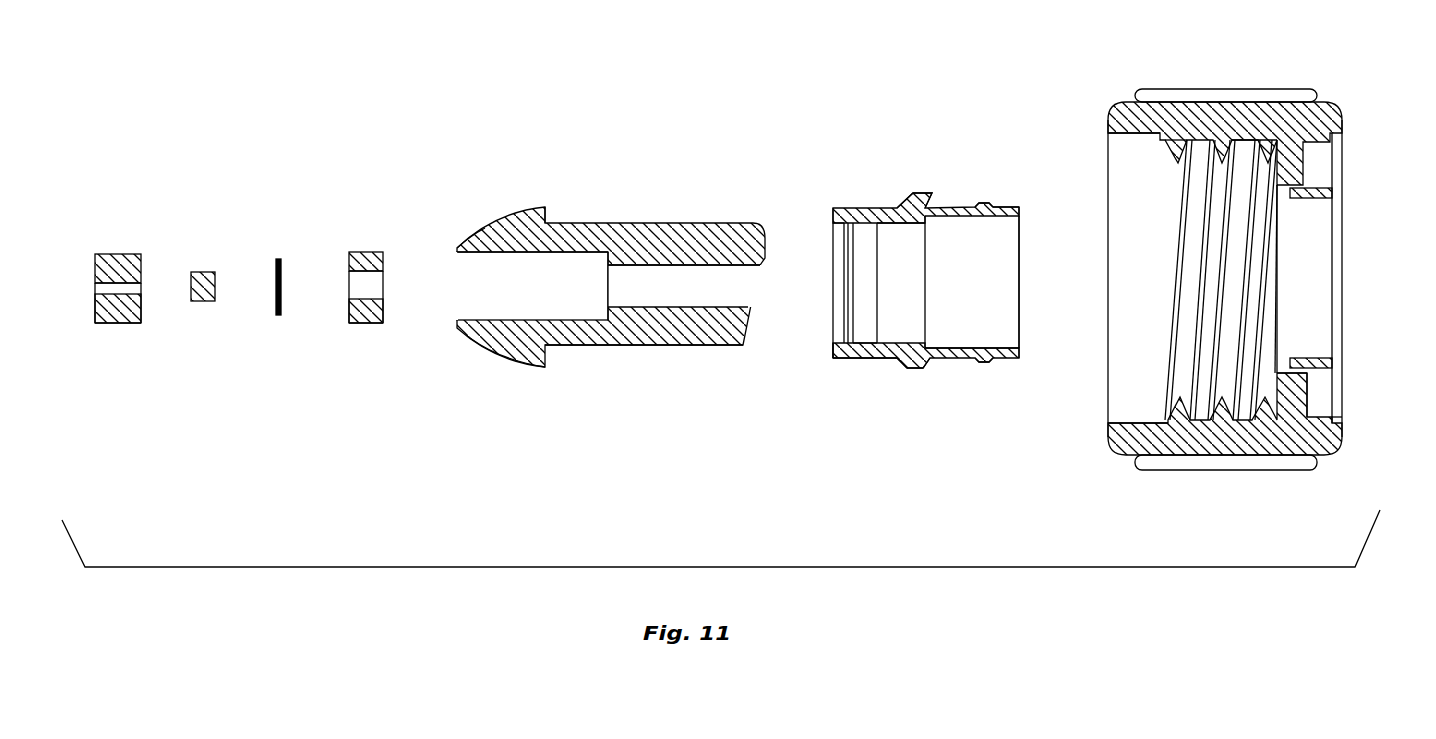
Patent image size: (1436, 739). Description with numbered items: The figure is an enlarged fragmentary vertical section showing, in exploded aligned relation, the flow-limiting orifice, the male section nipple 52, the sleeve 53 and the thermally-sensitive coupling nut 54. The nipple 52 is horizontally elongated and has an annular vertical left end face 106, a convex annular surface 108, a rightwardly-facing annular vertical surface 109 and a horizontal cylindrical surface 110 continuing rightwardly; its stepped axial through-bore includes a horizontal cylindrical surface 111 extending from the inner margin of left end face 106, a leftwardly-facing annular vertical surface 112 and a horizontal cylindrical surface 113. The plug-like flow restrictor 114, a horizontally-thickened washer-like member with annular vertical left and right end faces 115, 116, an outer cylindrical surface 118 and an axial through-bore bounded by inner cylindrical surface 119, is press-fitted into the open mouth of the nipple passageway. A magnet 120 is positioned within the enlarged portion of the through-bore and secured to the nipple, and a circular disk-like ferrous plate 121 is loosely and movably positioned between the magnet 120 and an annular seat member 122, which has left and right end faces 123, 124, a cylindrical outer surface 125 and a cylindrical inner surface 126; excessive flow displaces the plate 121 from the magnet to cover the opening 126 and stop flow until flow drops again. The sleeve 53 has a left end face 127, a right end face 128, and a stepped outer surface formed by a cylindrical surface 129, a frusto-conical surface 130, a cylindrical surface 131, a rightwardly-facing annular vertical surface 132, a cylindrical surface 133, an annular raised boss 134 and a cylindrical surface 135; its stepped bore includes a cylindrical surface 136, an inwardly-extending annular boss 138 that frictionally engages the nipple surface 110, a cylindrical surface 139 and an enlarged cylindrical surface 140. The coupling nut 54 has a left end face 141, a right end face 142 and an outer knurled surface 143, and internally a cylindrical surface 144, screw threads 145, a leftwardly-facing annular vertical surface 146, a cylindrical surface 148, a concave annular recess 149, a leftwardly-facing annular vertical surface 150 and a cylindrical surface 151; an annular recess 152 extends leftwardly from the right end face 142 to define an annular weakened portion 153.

The male section nipple 52 is at (637, 193).
The sleeve 53 is at (906, 182).
The coupling nut 54 is at (1205, 77).
The left end face 106 is at (457, 210).
The convex annular surface 108 is at (505, 360).
The rightwardly-facing annular vertical surface 109 is at (548, 211).
The horizontal cylindrical surface 110 is at (630, 347).
The horizontal cylindrical surface 111 is at (548, 256).
The leftwardly-facing annular vertical surface 112 is at (605, 312).
The horizontal cylindrical surface 113 is at (712, 267).
The flow restrictor 114 is at (120, 247).
The left end face 115 is at (95, 312).
The right end face 116 is at (140, 310).
The outer cylindrical surface 118 is at (112, 327).
The inner cylindrical surface 119 is at (93, 290).
The magnet 120 is at (199, 273).
The ferrous plate 121 is at (276, 260).
The annular seat member 122 is at (362, 252).
The left end face 123 is at (348, 320).
The right end face 124 is at (385, 320).
The cylindrical outer surface 125 is at (366, 325).
The cylindrical inner surface 126 is at (358, 275).
The left end face 127 is at (830, 347).
The right end face 128 is at (1021, 330).
The horizontal cylindrical surface 129 is at (858, 352).
The frusto-conical surface 130 is at (912, 368).
The horizontal cylindrical surface 131 is at (920, 378).
The rightwardly-facing annular vertical surface 132 is at (940, 187).
The horizontal cylindrical surface 133 is at (945, 364).
The annular raised boss 134 is at (983, 205).
The horizontal cylindrical surface 135 is at (1005, 208).
The horizontal cylindrical surface 136 is at (842, 226).
The inwardly-extending annular boss 138 is at (862, 342).
The horizontal cylindrical surface 139 is at (912, 228).
The horizontal cylindrical surface 140 is at (992, 347).
The left end face 141 is at (1108, 421).
The right end face 142 is at (1345, 423).
The outer knurled surface 143 is at (1270, 462).
The horizontal cylindrical surface 144 is at (1142, 140).
The screw threads 145 is at (1192, 150).
The leftwardly-facing annular vertical surface 146 is at (1272, 147).
The horizontal cylindrical surface 148 is at (1280, 352).
The concave annular recess 149 is at (1300, 185).
The leftwardly-facing annular vertical surface 150 is at (1282, 245).
The horizontal cylindrical surface 151 is at (1313, 199).
The annular recess 152 is at (1325, 403).
The annular weakened portion 153 is at (1310, 356).